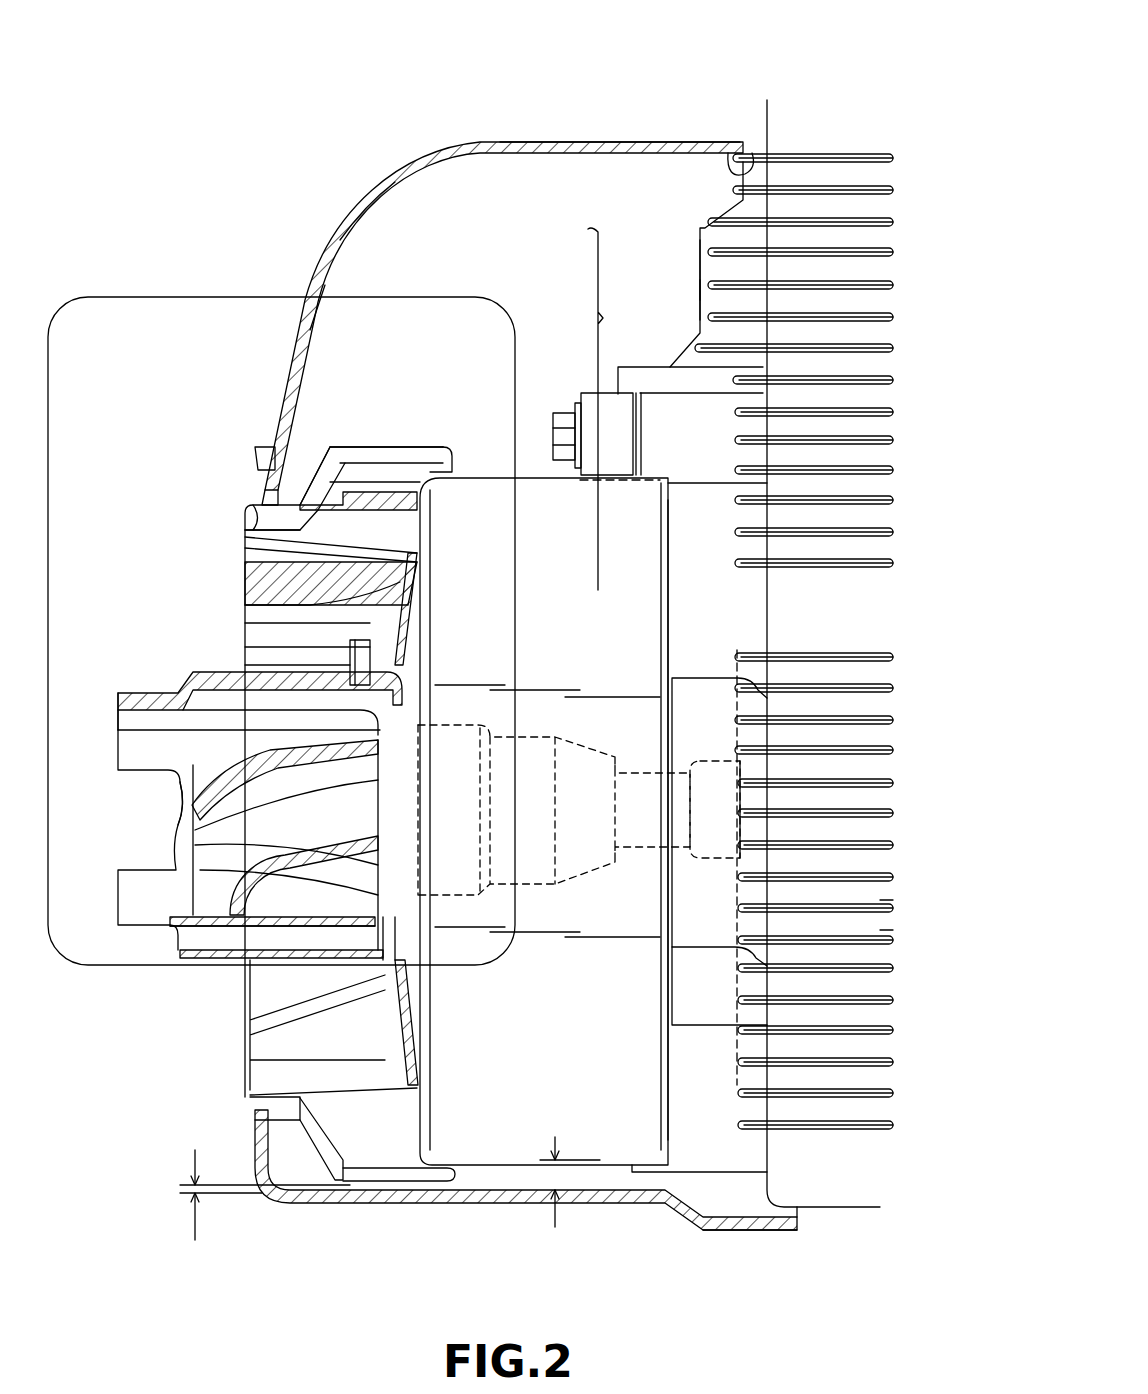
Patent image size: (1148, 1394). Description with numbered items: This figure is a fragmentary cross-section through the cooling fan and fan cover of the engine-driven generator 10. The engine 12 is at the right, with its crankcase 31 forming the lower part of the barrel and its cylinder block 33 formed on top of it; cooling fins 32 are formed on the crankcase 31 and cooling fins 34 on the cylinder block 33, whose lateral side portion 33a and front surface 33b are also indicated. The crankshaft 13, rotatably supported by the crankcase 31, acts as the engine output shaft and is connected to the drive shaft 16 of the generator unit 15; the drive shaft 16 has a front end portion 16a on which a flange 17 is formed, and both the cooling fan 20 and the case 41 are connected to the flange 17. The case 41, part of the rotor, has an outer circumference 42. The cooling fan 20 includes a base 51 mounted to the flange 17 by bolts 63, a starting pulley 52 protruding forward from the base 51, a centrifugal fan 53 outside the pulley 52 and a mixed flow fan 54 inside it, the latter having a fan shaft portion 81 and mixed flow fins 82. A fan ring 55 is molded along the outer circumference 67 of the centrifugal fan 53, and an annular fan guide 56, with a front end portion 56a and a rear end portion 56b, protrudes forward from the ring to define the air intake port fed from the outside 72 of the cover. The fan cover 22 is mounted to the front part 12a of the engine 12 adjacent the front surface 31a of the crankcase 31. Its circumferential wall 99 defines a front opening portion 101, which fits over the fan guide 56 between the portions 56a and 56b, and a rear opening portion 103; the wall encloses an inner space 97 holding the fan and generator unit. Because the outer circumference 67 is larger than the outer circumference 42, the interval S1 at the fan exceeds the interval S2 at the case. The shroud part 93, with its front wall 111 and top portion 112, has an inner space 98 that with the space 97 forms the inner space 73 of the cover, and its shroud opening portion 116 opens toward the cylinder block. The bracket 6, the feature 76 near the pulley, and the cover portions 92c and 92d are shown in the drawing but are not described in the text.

The engine-driven generator 10 is at (268, 213).
The fan cover 22 is at (508, 130).
The shroud part 93 is at (392, 176).
The front wall 111 is at (352, 215).
The top portion 112 is at (630, 143).
The shroud opening portion 116 is at (742, 153).
The engine 12 is at (843, 125).
The inner space 98 is at (540, 258).
The inner space 73 is at (675, 409).
The front surface 33b is at (765, 335).
The cooling fins 34 is at (880, 308).
The cylinder block 33 is at (878, 372).
The lateral side portion 33a is at (830, 325).
The fan unit 6 is at (158, 297).
The fan ring 55 is at (310, 447).
The centrifugal fan 53 is at (375, 445).
The generator unit 15 is at (497, 475).
The outer circumference 67 is at (410, 446).
The rear end portion 56b is at (318, 465).
The cover wall portion 92c is at (262, 500).
The front opening portion 101 is at (255, 522).
The outside 72 is at (62, 507).
The front end portion 56a is at (252, 529).
The outer circumference 42 is at (615, 470).
The case 41 is at (648, 535).
The cooling fan 20 is at (165, 668).
The starting pulley 52 is at (230, 677).
The fan guide 56 is at (280, 522).
The base 51 is at (400, 625).
The front end portion 16a is at (425, 730).
The drive shaft 16 is at (527, 737).
The crankshaft 13 is at (718, 760).
The inner space 97 is at (547, 585).
The shroud inlet 76 is at (180, 790).
The fan shaft portion 81 is at (215, 833).
The mixed flow fins 82 is at (258, 817).
The bolts 63 is at (350, 665).
The crankcase 31 is at (880, 800).
The front surface 31a is at (755, 830).
The cooling fins 32 is at (888, 932).
The front part 12a is at (785, 892).
The flange 17 is at (420, 945).
The mixed flow fan 54 is at (270, 922).
The interval S1 is at (263, 1207).
The circumferential wall 99 is at (515, 1195).
The interval S2 is at (570, 1201).
The rear opening portion 103 is at (790, 1205).
The cover bottom portion 92d is at (780, 1225).